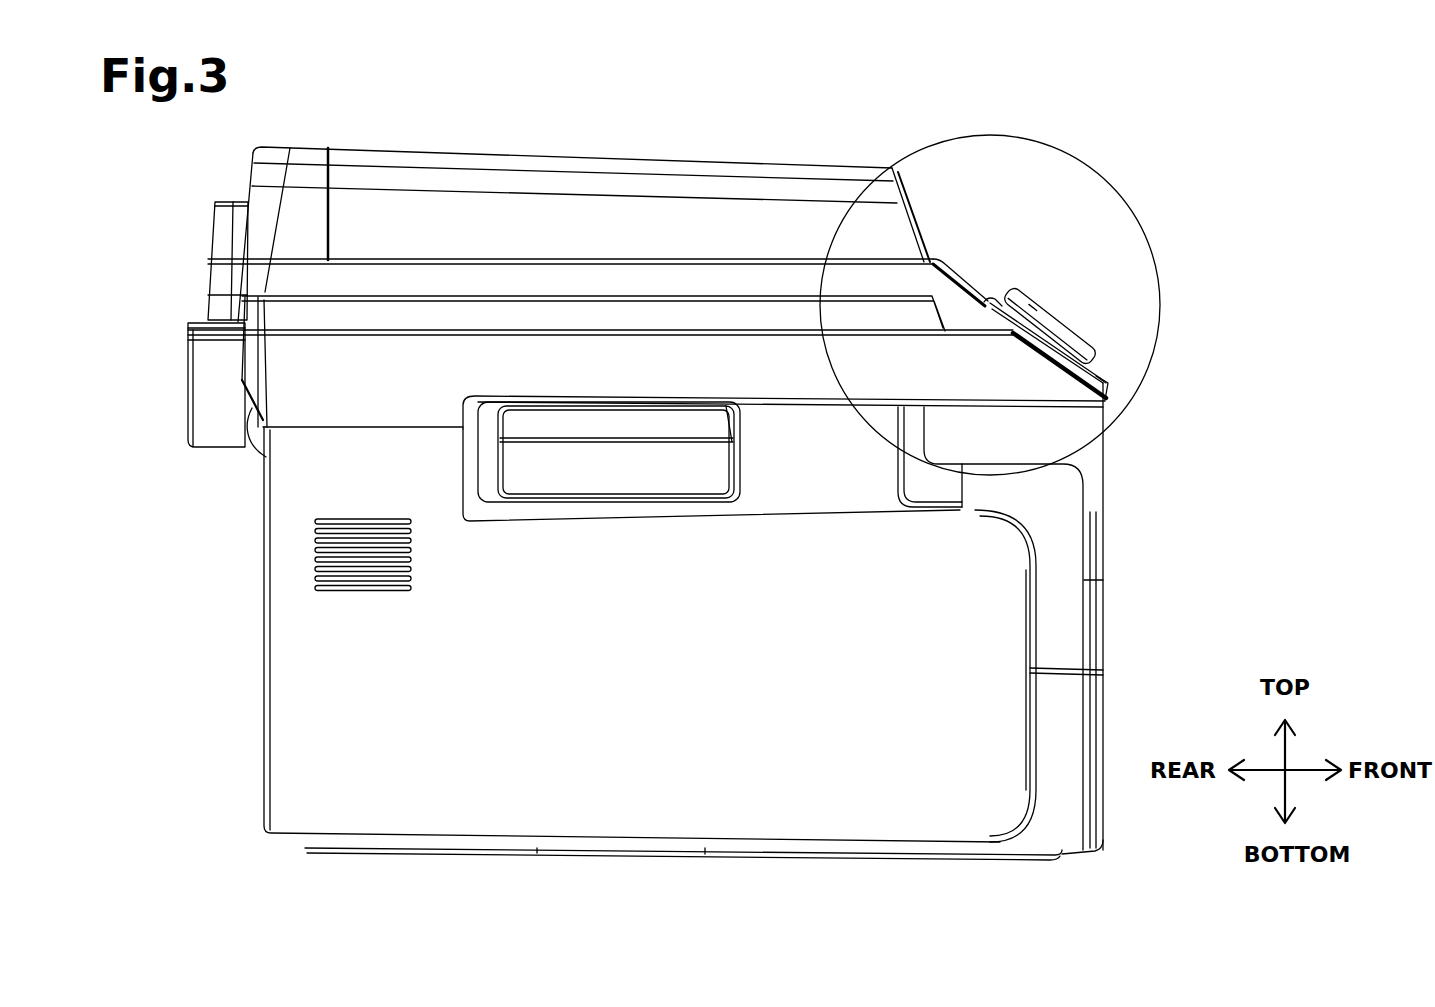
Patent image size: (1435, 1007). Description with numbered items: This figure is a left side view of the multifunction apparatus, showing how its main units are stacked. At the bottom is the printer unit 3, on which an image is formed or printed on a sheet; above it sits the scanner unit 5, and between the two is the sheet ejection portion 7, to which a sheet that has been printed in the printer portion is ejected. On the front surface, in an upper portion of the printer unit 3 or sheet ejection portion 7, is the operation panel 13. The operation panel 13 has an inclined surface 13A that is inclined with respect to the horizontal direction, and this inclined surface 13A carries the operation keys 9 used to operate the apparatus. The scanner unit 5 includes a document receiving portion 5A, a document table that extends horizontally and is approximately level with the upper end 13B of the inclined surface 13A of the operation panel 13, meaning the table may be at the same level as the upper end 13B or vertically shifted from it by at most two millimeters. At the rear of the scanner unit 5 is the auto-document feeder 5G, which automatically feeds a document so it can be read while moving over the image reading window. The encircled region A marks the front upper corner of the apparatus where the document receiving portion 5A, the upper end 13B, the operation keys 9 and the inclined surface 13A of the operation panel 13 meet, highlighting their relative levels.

The printer unit 3 is at (1068, 626).
The scanner unit 5 is at (916, 198).
The document receiving portion 5A is at (870, 298).
The auto-document feeder 5G is at (265, 204).
The sheet ejection portion 7 is at (1038, 430).
The operation keys 9 is at (1050, 325).
The operation panel 13 is at (1105, 398).
The inclined surface 13A is at (1107, 381).
The upper end 13B is at (990, 301).
The enlarged region A is at (1140, 220).